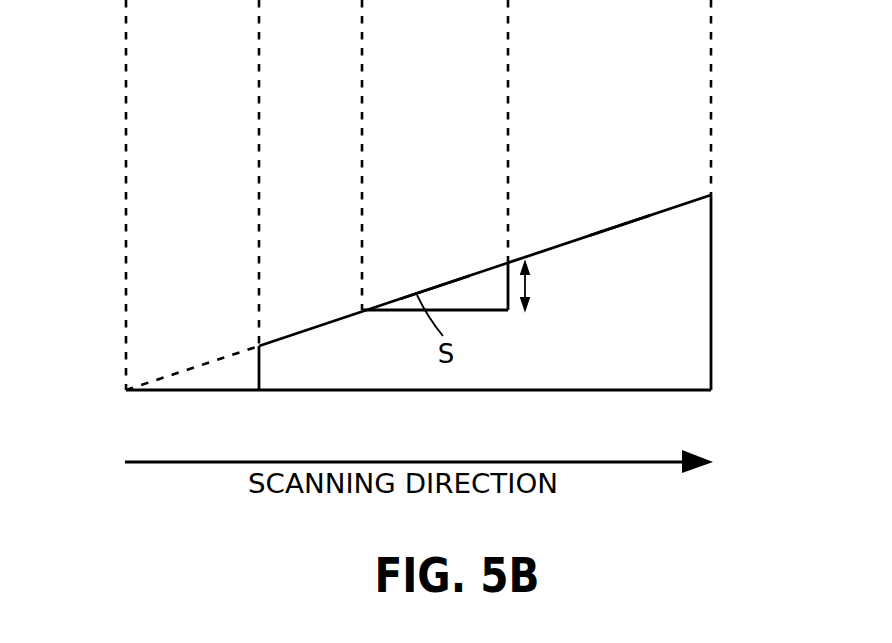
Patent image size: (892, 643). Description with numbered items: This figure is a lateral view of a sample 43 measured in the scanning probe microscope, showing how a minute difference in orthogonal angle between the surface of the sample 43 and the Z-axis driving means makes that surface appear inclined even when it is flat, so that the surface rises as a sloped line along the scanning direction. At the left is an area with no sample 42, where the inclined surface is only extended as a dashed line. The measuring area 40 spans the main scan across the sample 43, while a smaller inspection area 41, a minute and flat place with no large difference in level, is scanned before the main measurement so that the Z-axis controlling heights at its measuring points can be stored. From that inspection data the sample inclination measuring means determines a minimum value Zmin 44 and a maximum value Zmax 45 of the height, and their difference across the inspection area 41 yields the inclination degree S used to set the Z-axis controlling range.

The measuring area 40 is at (312, 328).
The inspection area 41 is at (442, 283).
The area with no sample 42 is at (205, 378).
The sample 43 is at (617, 226).
The minimum value Zmin 44 is at (363, 310).
The maximum value Zmax 45 is at (518, 258).